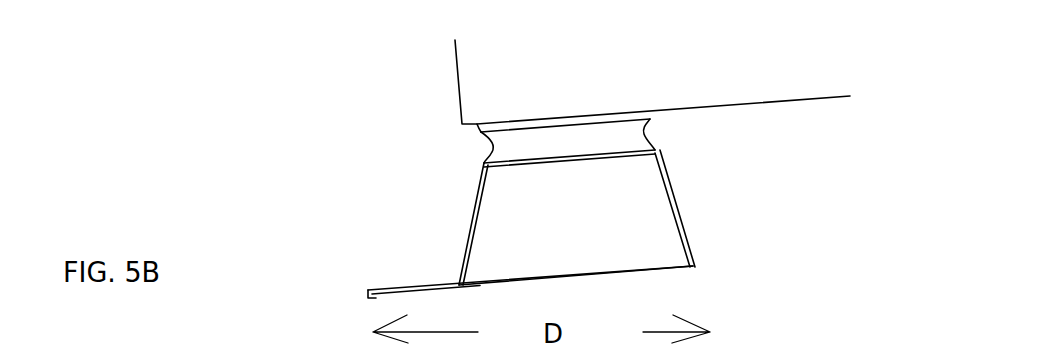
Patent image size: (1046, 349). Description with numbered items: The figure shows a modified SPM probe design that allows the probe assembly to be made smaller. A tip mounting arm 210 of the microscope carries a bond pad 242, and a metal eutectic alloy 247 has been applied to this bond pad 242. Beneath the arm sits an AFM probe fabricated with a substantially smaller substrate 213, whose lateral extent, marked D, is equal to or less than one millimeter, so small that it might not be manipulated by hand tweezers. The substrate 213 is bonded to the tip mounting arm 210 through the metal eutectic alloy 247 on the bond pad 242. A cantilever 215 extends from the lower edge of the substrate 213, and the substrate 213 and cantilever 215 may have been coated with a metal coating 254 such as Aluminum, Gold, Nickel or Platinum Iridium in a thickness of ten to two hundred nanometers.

The tip mounting arm 210 is at (652, 101).
The substrate 213 is at (577, 217).
The cantilever 215 is at (395, 288).
The bond pad 242 is at (643, 116).
The metal eutectic alloy 247 is at (623, 133).
The metal coating 254 is at (613, 157).